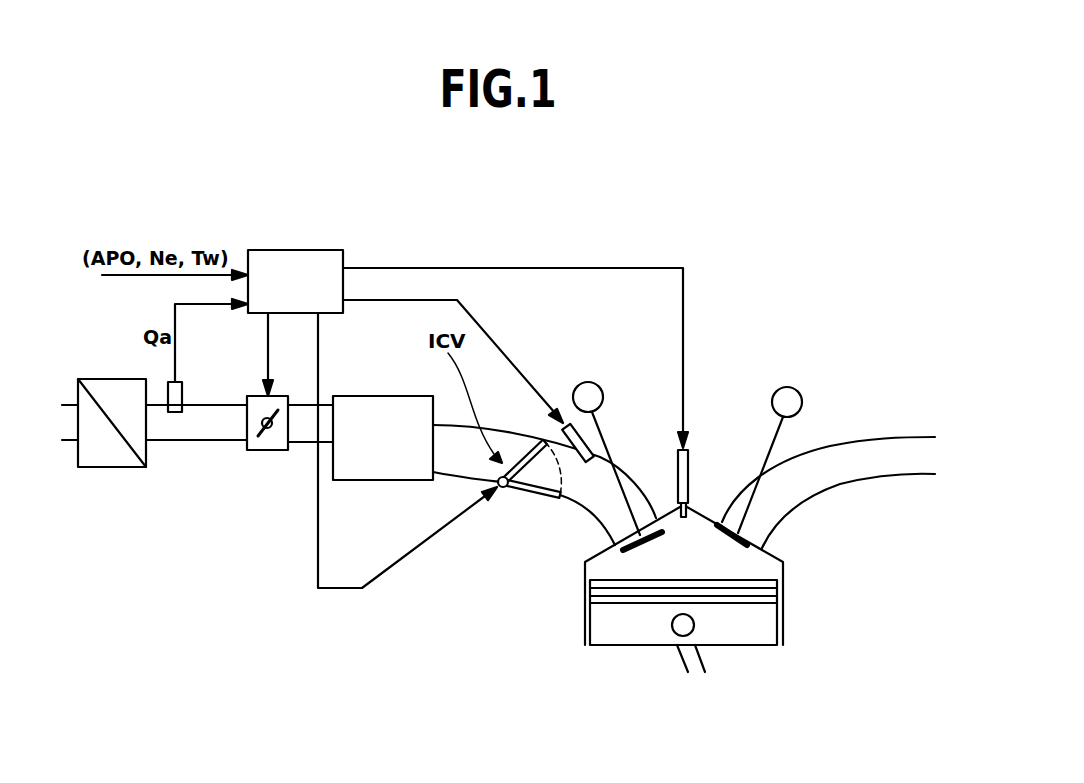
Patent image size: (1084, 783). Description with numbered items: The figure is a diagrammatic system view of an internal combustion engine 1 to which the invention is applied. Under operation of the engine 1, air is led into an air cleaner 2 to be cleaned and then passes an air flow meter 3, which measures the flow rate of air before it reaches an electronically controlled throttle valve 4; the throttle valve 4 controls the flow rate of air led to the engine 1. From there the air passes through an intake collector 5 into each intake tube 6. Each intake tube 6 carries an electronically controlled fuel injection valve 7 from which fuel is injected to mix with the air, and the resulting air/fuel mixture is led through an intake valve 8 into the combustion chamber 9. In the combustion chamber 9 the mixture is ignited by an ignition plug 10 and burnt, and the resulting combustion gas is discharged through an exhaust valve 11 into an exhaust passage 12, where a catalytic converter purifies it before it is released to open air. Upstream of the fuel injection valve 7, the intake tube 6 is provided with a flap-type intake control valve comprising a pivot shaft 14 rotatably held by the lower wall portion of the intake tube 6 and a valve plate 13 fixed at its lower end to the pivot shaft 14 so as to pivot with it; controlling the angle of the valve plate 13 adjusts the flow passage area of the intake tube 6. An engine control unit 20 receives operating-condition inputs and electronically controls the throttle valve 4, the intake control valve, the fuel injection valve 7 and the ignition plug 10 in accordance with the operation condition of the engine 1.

The internal combustion engine 1 is at (745, 368).
The air cleaner 2 is at (112, 467).
The air flow meter 3 is at (182, 393).
The throttle valve 4 is at (270, 450).
The intake collector 5 is at (373, 480).
The intake tube 6 is at (570, 497).
The fuel injection valve 7 is at (572, 432).
The intake valve 8 is at (640, 500).
The combustion chamber 9 is at (675, 568).
The ignition plug 10 is at (692, 468).
The exhaust valve 11 is at (735, 498).
The exhaust passage 12 is at (860, 445).
The valve plate 13 is at (518, 468).
The pivot shaft 14 is at (503, 490).
The engine control unit 20 is at (297, 250).